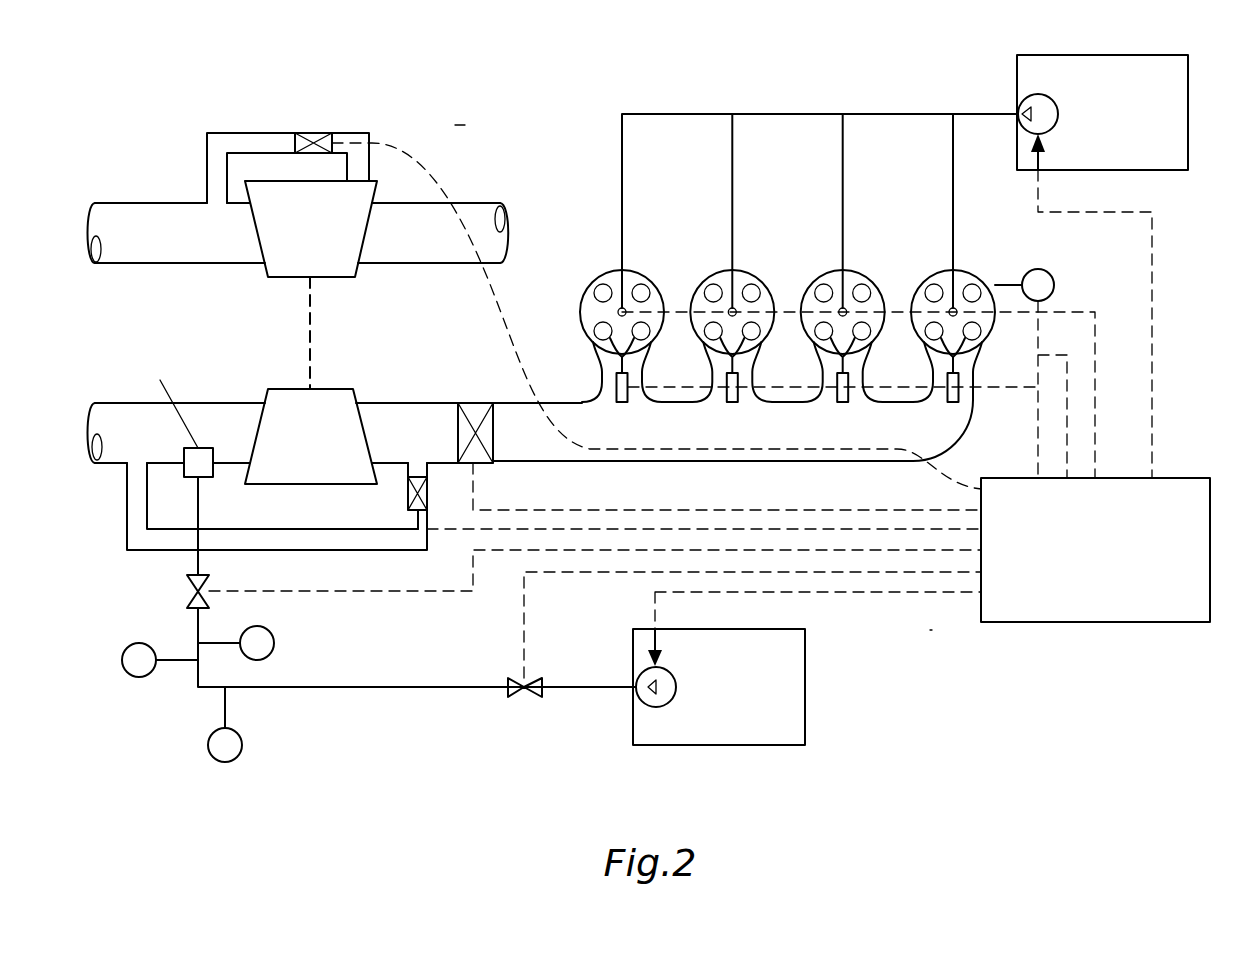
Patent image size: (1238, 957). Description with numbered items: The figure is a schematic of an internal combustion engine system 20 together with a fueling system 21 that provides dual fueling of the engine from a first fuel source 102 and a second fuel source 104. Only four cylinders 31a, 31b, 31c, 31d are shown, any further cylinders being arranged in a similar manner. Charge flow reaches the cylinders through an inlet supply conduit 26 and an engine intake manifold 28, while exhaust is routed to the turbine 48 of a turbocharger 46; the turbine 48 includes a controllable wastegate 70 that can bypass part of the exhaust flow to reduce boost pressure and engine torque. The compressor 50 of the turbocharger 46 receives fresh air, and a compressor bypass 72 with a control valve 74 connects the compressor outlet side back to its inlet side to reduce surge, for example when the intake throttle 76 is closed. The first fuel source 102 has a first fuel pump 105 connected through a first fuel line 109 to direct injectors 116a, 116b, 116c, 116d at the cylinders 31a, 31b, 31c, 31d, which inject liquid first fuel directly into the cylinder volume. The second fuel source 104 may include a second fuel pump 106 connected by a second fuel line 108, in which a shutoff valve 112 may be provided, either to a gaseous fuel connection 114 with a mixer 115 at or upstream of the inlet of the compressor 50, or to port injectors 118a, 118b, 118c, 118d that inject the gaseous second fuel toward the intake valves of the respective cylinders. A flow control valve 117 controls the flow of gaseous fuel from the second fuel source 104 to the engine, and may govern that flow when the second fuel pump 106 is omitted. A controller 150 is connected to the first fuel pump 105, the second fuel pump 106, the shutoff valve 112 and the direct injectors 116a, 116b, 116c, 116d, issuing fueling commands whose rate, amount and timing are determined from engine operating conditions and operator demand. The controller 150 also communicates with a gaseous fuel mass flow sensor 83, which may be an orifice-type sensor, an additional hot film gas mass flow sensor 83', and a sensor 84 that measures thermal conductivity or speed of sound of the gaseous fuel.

The internal combustion engine system 20 is at (528, 124).
The fueling system 21 is at (933, 638).
The inlet supply conduit 26 is at (112, 401).
The engine intake manifold 28 is at (720, 463).
The cylinder 31a is at (930, 272).
The cylinder 31b is at (820, 272).
The cylinder 31c is at (710, 272).
The cylinder 31d is at (600, 272).
The turbocharger 46 is at (292, 341).
The turbine 48 is at (297, 238).
The compressor 50 is at (297, 448).
The wastegate 70 is at (310, 131).
The compressor bypass 72 is at (127, 552).
The control valve 74 is at (418, 475).
The intake throttle 76 is at (476, 401).
The gaseous fuel mass flow sensor 83 is at (134, 660).
The hot film gas mass flow sensor 83' is at (269, 643).
The thermal conductivity sensor 84 is at (208, 744).
The first fuel source 102 is at (1084, 119).
The second fuel source 104 is at (702, 694).
The first fuel pump 105 is at (1054, 100).
The second fuel pump 106 is at (674, 700).
The second fuel line 108 is at (373, 689).
The first fuel line 109 is at (790, 112).
The shutoff valve 112 is at (186, 594).
The gaseous fuel connection 114 is at (198, 479).
The mixer 115 is at (160, 380).
The direct injector 116a is at (958, 300).
The direct injector 116b is at (848, 300).
The direct injector 116c is at (738, 300).
The direct injector 116d is at (628, 300).
The flow control valve 117 is at (527, 698).
The port injector 118a is at (950, 404).
The port injector 118b is at (840, 404).
The port injector 118c is at (730, 404).
The port injector 118d is at (620, 404).
The controller 150 is at (771, 382).